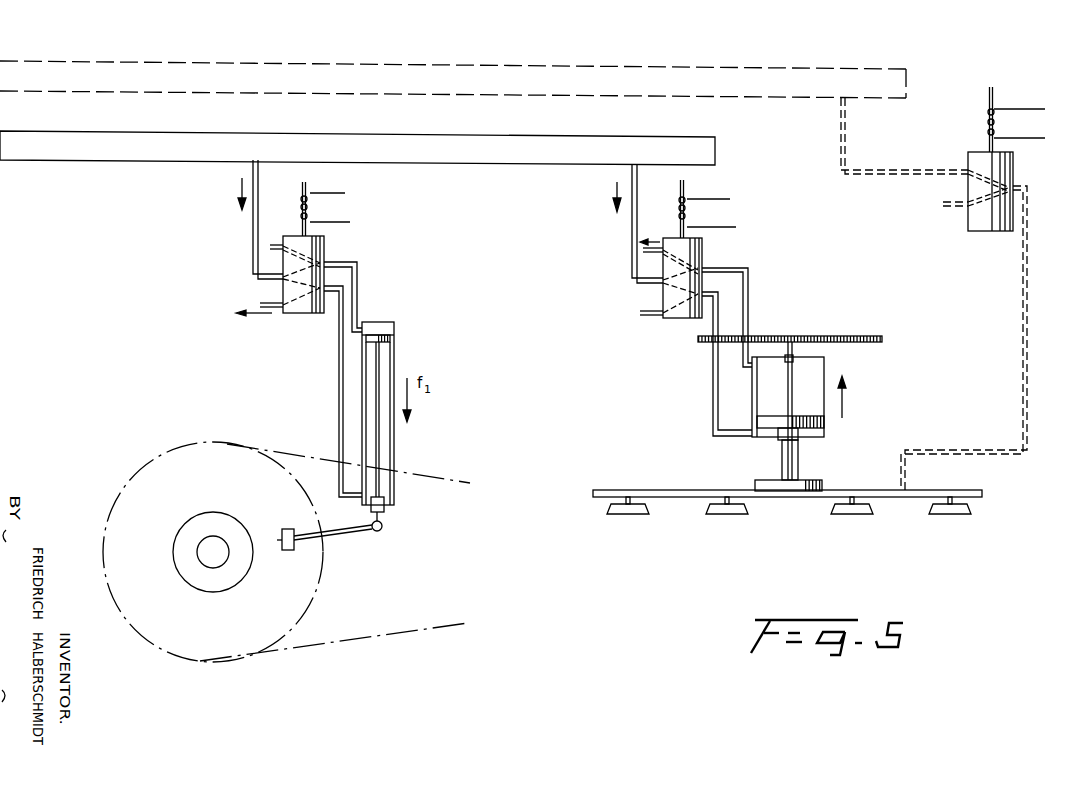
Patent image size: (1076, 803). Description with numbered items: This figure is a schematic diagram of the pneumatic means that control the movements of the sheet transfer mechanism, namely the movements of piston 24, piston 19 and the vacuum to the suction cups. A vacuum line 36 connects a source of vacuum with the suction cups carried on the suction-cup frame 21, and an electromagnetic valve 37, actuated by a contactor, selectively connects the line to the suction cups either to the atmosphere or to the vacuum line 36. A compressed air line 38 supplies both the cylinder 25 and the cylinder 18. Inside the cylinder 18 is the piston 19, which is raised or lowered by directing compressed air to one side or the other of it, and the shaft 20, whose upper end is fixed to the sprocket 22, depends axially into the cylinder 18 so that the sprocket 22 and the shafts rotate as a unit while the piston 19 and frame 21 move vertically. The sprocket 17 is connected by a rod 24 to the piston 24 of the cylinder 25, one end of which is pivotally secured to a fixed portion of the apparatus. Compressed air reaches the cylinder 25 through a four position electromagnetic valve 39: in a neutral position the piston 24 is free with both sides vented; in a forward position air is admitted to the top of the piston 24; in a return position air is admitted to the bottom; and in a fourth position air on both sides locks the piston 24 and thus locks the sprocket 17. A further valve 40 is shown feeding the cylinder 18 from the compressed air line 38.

The sprocket 17 is at (313, 586).
The cylinder 18 is at (825, 410).
The piston 19 is at (775, 414).
The shaft 20 is at (793, 375).
The suction-cup frame 21 is at (672, 491).
The sprocket 22 is at (823, 337).
The piston and rod 24 is at (380, 338).
The cylinder 25 is at (394, 440).
The vacuum line 36 is at (355, 66).
The electromagnetic valve 37 is at (1013, 167).
The compressed air line 38 is at (495, 158).
The four position electromagnetic valve 39 is at (325, 252).
The solenoid valve 40 is at (703, 252).